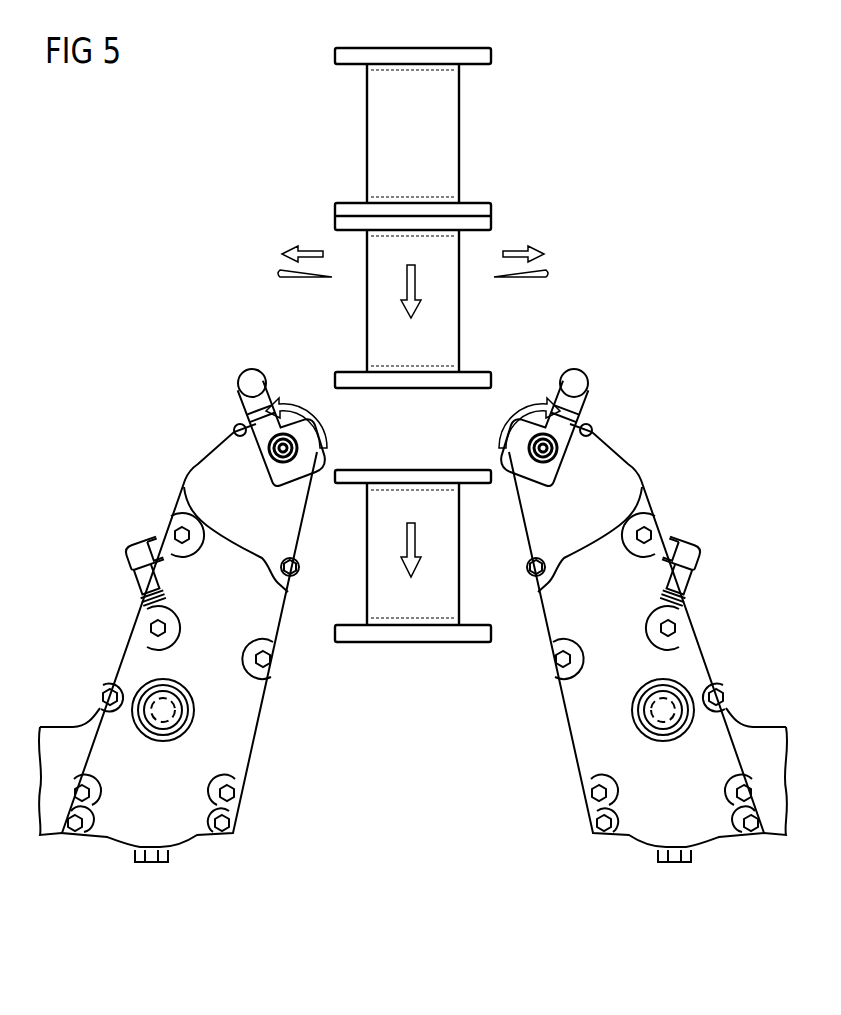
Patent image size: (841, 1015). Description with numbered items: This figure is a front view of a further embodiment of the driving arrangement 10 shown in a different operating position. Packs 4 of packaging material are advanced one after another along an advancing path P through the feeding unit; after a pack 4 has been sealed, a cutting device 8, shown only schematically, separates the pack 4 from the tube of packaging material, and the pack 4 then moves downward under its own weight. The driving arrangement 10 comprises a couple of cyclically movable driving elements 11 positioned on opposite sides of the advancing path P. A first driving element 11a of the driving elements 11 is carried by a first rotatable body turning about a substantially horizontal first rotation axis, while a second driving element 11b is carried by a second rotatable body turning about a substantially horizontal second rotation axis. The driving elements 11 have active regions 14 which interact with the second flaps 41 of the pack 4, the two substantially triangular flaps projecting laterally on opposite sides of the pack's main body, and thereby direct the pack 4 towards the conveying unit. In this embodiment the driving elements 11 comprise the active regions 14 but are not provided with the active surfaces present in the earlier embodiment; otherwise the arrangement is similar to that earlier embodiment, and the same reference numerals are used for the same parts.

The pack 4 is at (415, 345).
The second flaps 41 is at (356, 373).
The cutting device 8 is at (542, 270).
The driving arrangement 10 is at (206, 413).
The driving elements 11 is at (389, 398).
The first driving element 11a is at (253, 370).
The second driving element 11b is at (575, 370).
The active regions 14 is at (267, 381).
The advancing path P is at (416, 540).